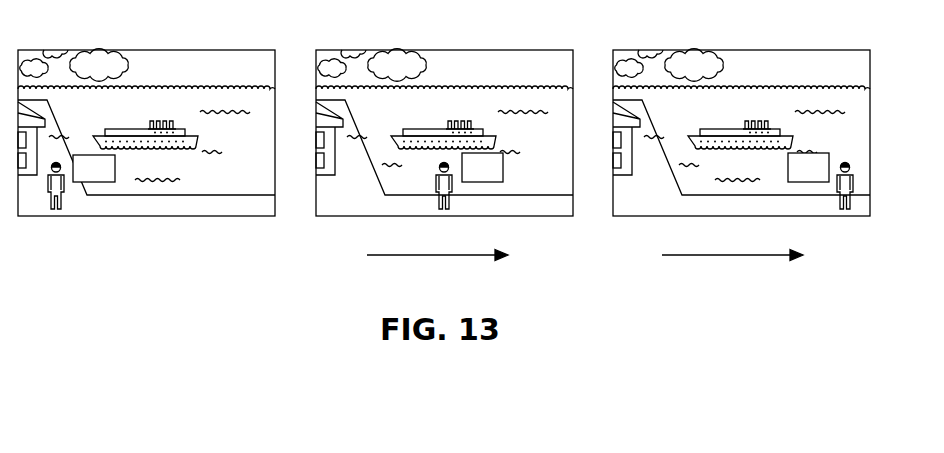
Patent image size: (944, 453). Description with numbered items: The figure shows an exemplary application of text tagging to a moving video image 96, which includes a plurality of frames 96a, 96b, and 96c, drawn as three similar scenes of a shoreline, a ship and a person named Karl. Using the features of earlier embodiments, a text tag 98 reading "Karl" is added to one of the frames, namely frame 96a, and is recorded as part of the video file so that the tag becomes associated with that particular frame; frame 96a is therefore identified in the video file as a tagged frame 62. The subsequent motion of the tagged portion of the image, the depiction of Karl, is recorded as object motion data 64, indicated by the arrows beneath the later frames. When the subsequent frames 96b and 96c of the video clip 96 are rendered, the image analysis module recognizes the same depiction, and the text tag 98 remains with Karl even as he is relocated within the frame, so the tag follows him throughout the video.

The moving video image 96 is at (870, 46).
The first frame 96a is at (263, 76).
The subsequent frame 96b is at (444, 132).
The subsequent frame 96c is at (741, 132).
The text tag 98 is at (116, 170).
The tagged frame 62 is at (107, 216).
The object motion data 64 is at (585, 268).